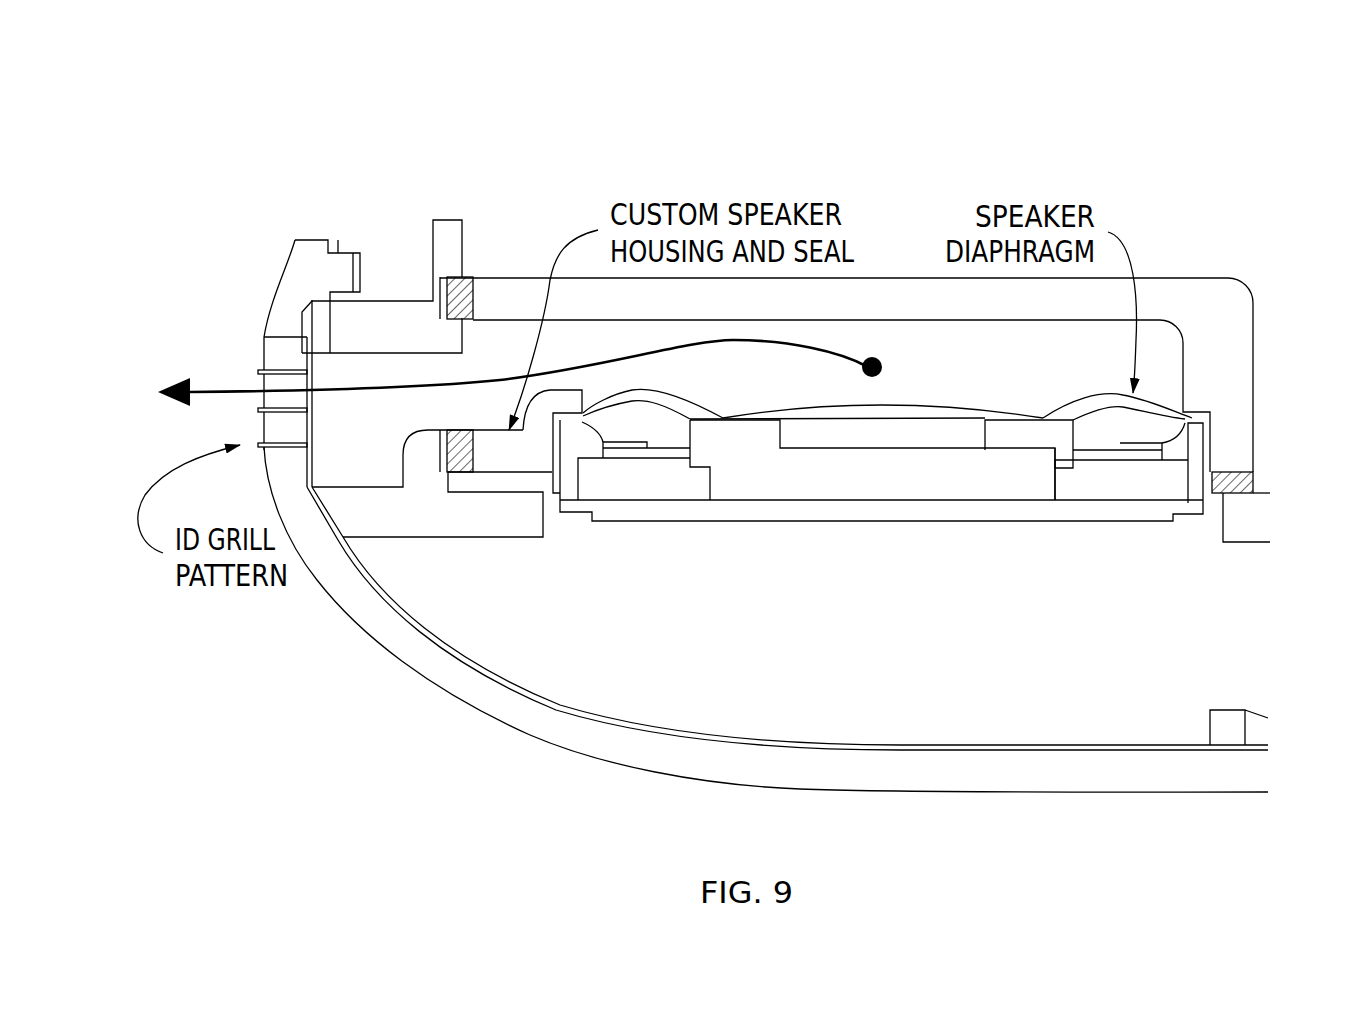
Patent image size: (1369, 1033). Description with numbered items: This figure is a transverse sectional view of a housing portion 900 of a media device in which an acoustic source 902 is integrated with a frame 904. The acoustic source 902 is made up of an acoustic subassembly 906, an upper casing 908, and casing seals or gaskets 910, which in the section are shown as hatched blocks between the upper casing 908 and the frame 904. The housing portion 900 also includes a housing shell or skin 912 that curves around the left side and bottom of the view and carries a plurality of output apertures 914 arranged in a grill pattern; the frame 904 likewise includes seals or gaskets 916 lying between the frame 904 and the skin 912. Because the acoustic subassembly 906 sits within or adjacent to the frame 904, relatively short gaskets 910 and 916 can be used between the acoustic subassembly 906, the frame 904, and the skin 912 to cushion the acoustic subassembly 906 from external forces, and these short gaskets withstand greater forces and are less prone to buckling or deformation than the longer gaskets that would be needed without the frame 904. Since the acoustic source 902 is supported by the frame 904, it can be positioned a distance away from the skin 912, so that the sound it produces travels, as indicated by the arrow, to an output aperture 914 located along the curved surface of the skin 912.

The housing portion 900 is at (1200, 153).
The acoustic source 902 is at (1257, 264).
The frame 904 is at (400, 305).
The acoustic subassembly 906 is at (862, 497).
The upper casing 908 is at (889, 285).
The casing seals or gaskets 910 is at (467, 295).
The housing shell or skin 912 is at (422, 650).
The output apertures 914 is at (270, 372).
The seals or gaskets 916 is at (307, 325).